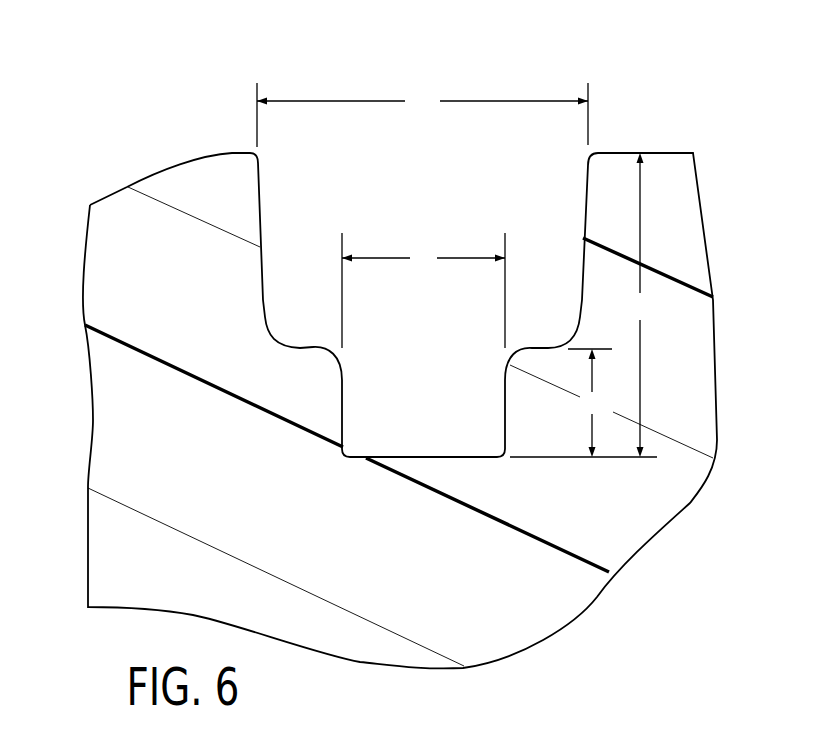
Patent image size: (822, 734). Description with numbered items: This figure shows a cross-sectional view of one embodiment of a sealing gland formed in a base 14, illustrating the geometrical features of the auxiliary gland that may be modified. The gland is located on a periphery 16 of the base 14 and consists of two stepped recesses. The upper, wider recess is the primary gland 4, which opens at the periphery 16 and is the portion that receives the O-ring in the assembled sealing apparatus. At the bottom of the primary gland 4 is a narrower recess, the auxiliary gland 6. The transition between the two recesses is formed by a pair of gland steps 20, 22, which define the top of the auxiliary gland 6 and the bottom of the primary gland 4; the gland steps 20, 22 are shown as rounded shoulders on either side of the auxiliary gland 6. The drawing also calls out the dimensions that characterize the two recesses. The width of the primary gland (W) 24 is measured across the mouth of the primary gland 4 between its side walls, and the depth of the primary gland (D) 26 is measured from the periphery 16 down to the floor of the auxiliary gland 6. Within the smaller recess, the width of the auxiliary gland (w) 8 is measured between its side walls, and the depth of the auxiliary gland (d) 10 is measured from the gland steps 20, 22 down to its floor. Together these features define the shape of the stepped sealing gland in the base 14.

The primary gland 4 is at (537, 213).
The auxiliary gland 6 is at (447, 427).
The width of the auxiliary gland (w) 8 is at (423, 245).
The depth of the auxiliary gland (d) 10 is at (607, 402).
The base 14 is at (113, 275).
The periphery 16 is at (650, 152).
The gland step 20 is at (513, 355).
The gland step 22 is at (338, 352).
The width of the primary gland (W) 24 is at (422, 83).
The depth of the primary gland (D) 26 is at (655, 307).